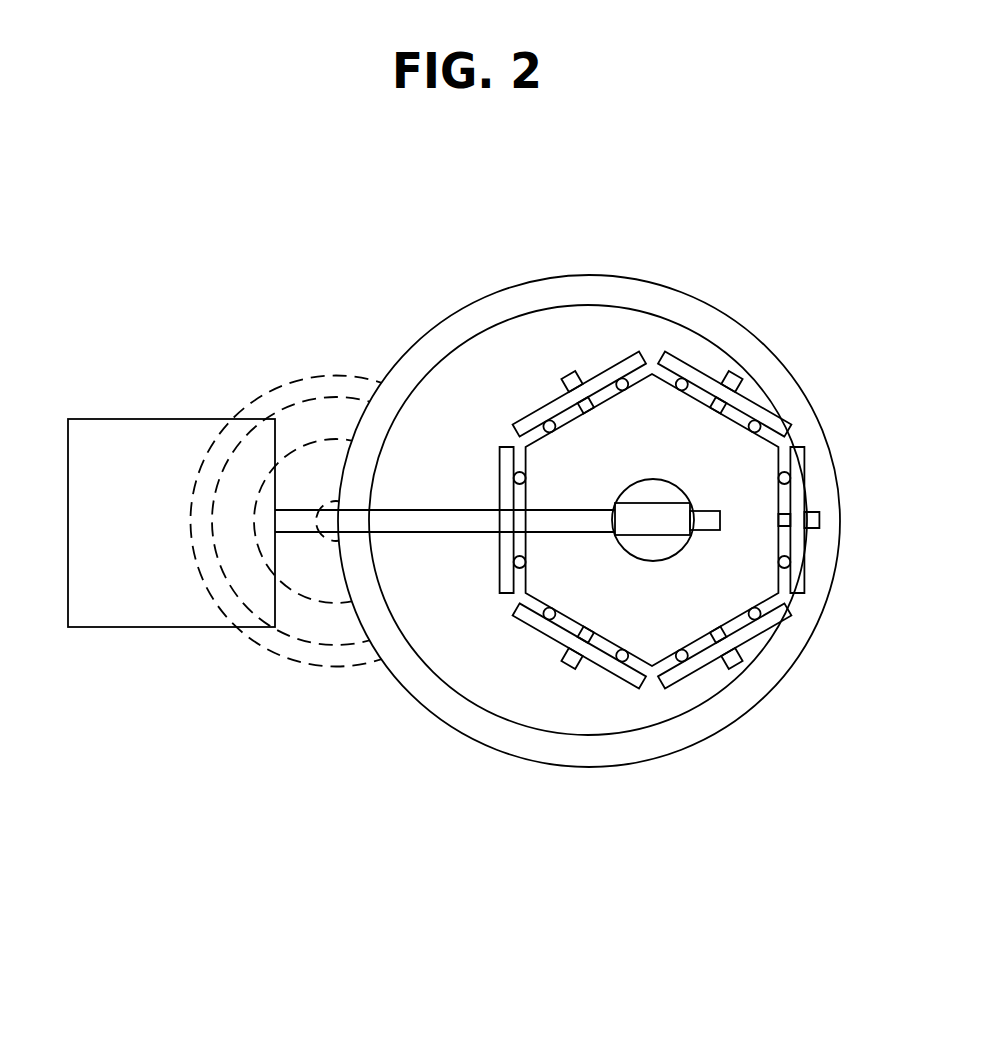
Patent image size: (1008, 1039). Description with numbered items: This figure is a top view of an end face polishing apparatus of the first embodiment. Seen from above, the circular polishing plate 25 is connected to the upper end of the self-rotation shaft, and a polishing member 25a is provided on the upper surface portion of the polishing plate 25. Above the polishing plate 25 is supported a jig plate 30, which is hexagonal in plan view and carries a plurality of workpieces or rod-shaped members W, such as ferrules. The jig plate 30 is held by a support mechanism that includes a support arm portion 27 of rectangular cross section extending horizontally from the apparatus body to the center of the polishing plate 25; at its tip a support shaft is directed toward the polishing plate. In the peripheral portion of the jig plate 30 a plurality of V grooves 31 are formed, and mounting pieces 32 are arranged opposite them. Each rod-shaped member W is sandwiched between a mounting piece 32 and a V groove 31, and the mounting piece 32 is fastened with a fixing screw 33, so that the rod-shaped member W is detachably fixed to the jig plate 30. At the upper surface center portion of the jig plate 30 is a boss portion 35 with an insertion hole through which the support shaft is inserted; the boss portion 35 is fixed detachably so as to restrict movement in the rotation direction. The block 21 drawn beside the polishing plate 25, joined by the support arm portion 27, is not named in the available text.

The motor 21 is at (94, 442).
The polishing plate 25 is at (512, 310).
The polishing member 25a is at (590, 318).
The support arm portion 27 is at (426, 530).
The jig plate 30 is at (667, 430).
The V groove 31 is at (773, 627).
The mounting piece 32 is at (622, 670).
The fixing screw 33 is at (563, 665).
The boss portion 35 is at (676, 497).
The rod-shaped member W is at (682, 662).